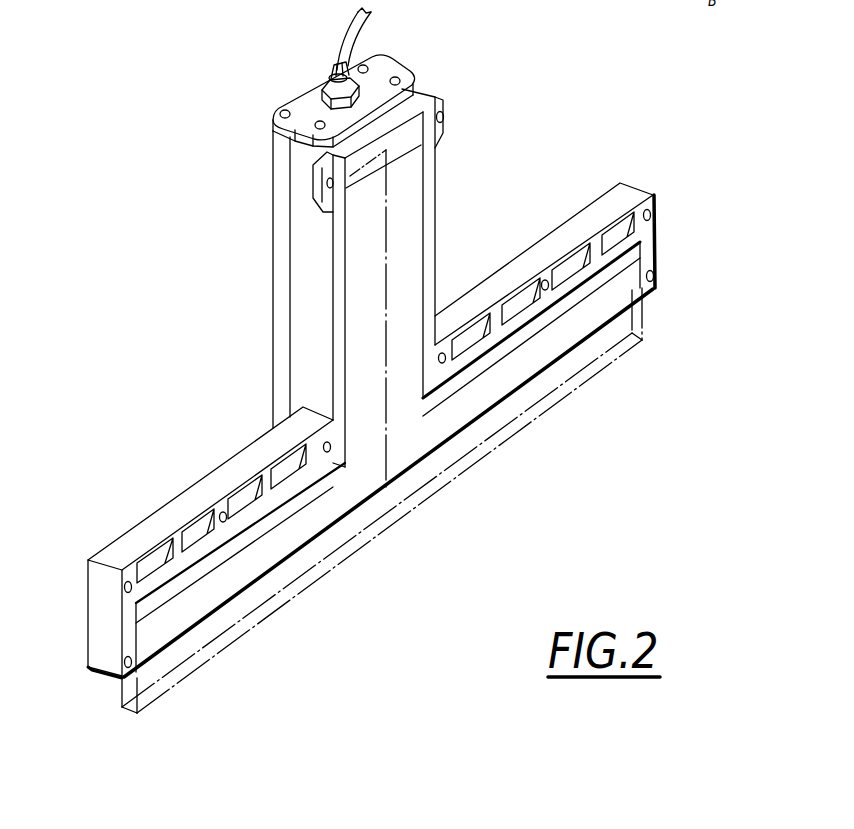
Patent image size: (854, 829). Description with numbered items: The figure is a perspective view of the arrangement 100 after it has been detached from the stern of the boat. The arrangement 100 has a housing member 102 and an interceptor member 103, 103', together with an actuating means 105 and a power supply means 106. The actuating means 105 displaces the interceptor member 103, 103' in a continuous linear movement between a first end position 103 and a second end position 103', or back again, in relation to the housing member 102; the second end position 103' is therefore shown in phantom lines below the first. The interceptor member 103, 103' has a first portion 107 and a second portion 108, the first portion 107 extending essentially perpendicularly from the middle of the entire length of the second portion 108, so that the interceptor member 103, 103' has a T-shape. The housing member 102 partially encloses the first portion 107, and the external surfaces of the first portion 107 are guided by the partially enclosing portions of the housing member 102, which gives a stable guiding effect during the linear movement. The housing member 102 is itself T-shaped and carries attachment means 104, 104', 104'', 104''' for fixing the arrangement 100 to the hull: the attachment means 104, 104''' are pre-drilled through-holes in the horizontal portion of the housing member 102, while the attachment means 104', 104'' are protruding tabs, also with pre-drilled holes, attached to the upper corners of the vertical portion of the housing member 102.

The arrangement 100 is at (212, 117).
The housing member 102 is at (310, 252).
The interceptor member 103 is at (437, 450).
The interceptor member in second end position 103' is at (441, 498).
The attachment means 104 is at (698, 234).
The protruding tab 104' is at (487, 96).
The protruding tab 104'' is at (252, 173).
The attachment means 104''' is at (113, 557).
The actuating means 105 is at (387, 209).
The power supply means 106 is at (340, 55).
The first portion 107 is at (367, 293).
The second portion 108 is at (208, 592).